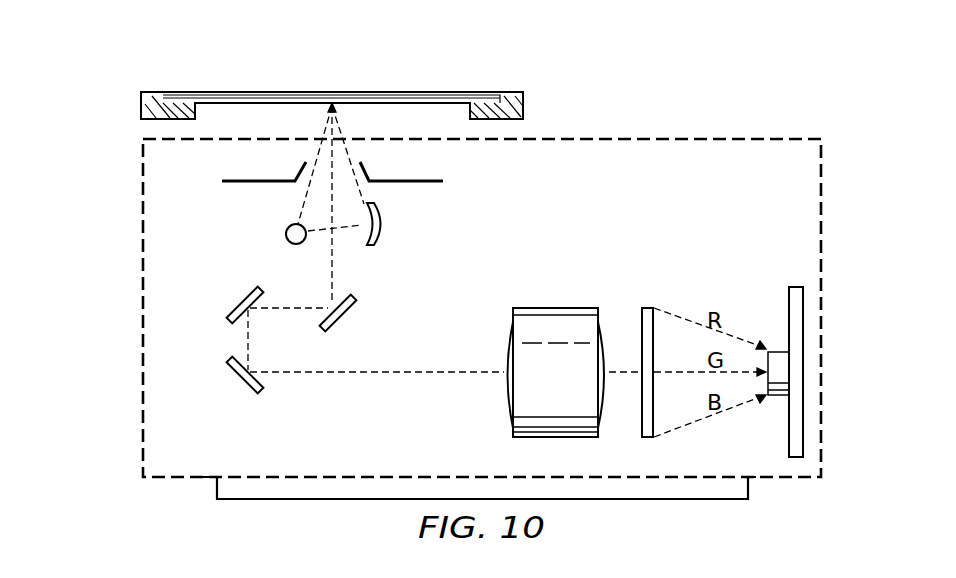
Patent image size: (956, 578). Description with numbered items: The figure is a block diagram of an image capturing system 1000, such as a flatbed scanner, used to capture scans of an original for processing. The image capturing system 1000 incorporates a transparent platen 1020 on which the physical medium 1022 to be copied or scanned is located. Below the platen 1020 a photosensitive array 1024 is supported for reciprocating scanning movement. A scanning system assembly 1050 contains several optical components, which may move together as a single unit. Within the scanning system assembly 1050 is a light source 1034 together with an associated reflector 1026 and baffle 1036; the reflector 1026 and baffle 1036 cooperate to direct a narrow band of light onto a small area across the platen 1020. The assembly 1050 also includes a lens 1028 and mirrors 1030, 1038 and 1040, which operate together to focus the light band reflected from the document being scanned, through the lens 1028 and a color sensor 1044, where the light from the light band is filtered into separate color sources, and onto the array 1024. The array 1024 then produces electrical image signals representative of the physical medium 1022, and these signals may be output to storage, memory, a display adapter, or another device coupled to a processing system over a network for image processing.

The image capturing system 1000 is at (640, 113).
The transparent platen 1020 is at (450, 98).
The physical medium 1022 is at (283, 90).
The photosensitive array 1024 is at (775, 398).
The reflector 1026 is at (383, 235).
The lens 1028 is at (555, 307).
The mirror 1030 is at (238, 298).
The light source 1034 is at (284, 232).
The baffle 1036 is at (443, 182).
The mirror 1038 is at (350, 320).
The mirror 1040 is at (237, 383).
The color sensor 1044 is at (648, 307).
The scanning system assembly 1050 is at (140, 344).